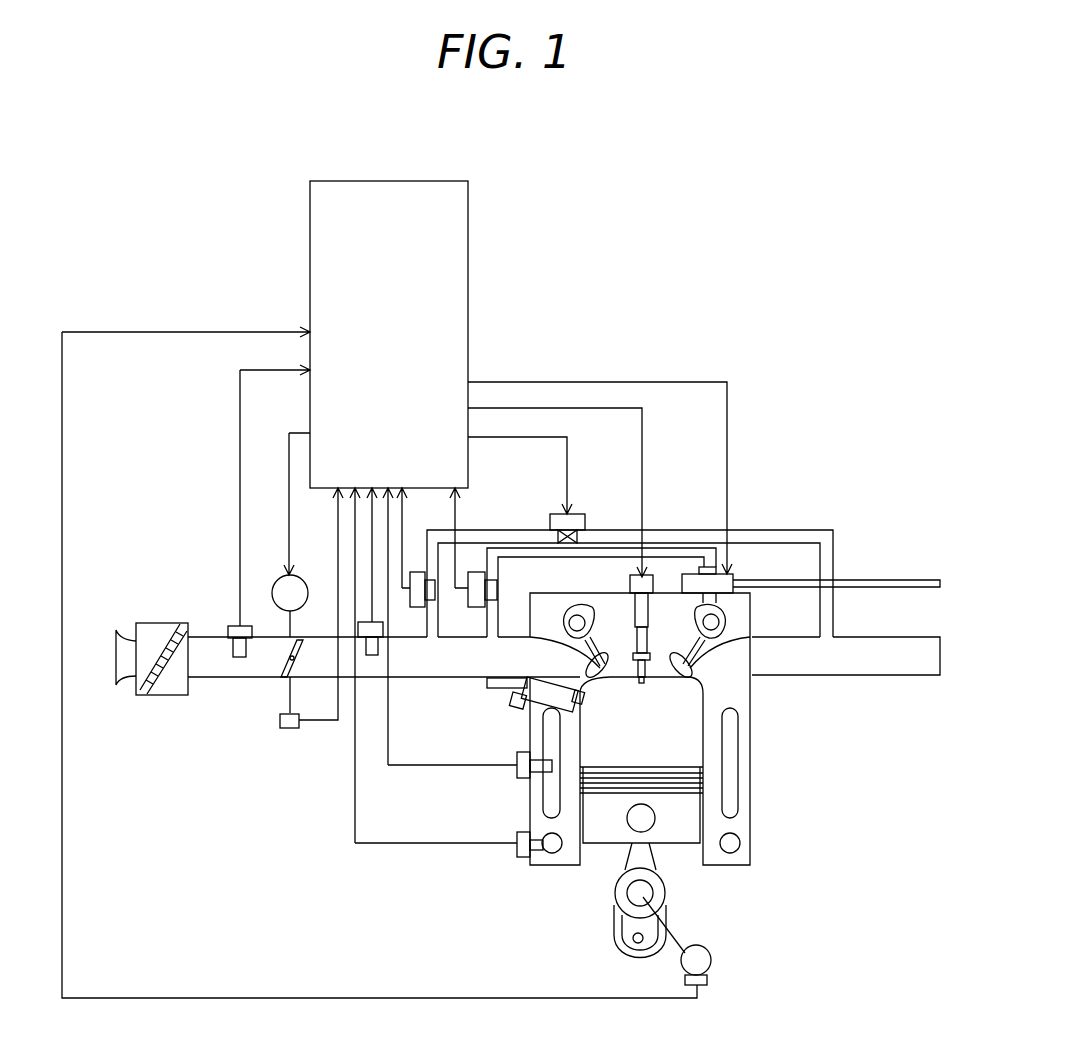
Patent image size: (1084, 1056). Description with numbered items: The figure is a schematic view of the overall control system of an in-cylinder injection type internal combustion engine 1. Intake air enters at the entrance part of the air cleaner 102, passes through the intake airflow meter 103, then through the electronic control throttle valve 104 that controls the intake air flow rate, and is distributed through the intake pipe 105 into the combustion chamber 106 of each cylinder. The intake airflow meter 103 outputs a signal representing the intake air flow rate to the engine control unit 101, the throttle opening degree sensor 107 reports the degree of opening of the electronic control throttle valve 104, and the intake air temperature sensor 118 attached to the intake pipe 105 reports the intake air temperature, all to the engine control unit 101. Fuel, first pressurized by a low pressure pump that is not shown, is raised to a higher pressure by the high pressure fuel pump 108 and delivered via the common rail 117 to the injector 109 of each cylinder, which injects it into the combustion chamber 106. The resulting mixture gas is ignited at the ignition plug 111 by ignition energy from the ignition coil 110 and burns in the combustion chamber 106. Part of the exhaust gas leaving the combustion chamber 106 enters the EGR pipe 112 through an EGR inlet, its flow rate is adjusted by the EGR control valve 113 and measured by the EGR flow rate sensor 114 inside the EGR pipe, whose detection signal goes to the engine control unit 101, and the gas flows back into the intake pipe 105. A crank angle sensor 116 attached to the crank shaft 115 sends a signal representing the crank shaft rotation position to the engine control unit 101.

The in-cylinder injection type internal combustion engine 1 is at (537, 593).
The engine control unit 101 is at (310, 238).
The air cleaner 102 is at (145, 623).
The intake airflow meter (airflow sensor) 103 is at (240, 626).
The electronic control throttle valve 104 is at (304, 576).
The intake pipe 105 is at (398, 668).
The combustion chamber 106 is at (657, 683).
The throttle opening degree sensor 107 is at (280, 720).
The high pressure fuel pump 108 is at (733, 578).
The injector 109 is at (523, 678).
The ignition coil 110 is at (630, 585).
The ignition plug 111 is at (637, 642).
The EGR pipe 112 is at (690, 530).
The EGR control valve 113 is at (573, 513).
The EGR flow rate sensor 114 is at (436, 590).
The crank shaft 115 is at (627, 893).
The crank angle sensor 116 is at (711, 958).
The common rail 117 is at (512, 548).
The intake air temperature sensor 118 is at (370, 645).